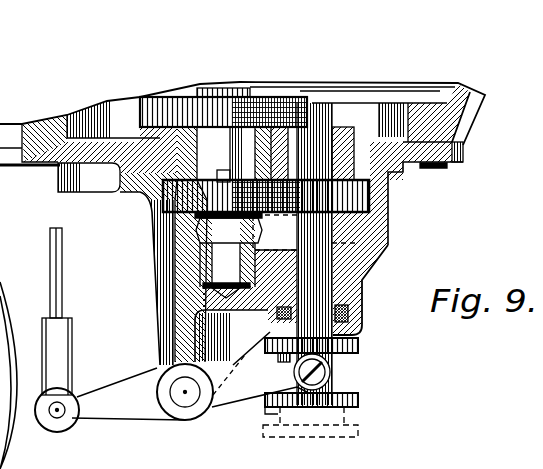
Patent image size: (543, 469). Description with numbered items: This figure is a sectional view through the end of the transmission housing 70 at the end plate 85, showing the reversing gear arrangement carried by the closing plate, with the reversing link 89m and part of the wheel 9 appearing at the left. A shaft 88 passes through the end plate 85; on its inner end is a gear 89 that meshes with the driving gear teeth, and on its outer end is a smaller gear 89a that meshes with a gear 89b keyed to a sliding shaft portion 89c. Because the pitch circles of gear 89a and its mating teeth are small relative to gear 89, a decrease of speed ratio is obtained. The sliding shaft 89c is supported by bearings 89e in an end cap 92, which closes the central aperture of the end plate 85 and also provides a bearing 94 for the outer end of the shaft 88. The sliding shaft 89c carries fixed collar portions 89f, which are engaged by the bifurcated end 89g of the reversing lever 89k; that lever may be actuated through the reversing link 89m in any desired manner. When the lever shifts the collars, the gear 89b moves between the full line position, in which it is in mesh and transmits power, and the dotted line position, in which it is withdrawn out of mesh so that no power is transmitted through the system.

The wheel 9 is at (0, 277).
The housing 70 is at (467, 104).
The end plate 85 is at (465, 154).
The shaft 88 is at (213, 154).
The gear 89 is at (273, 95).
The gear 89a is at (148, 198).
The gear 89b is at (372, 200).
The sliding shaft portion 89c is at (352, 302).
The bearings 89e is at (337, 128).
The fixed collar portions 89f is at (360, 395).
The bifurcated end 89g is at (250, 390).
The reversing lever 89k is at (122, 408).
The reversing link 89m is at (63, 300).
The end cap 92 is at (349, 248).
The bearing 94 is at (207, 275).